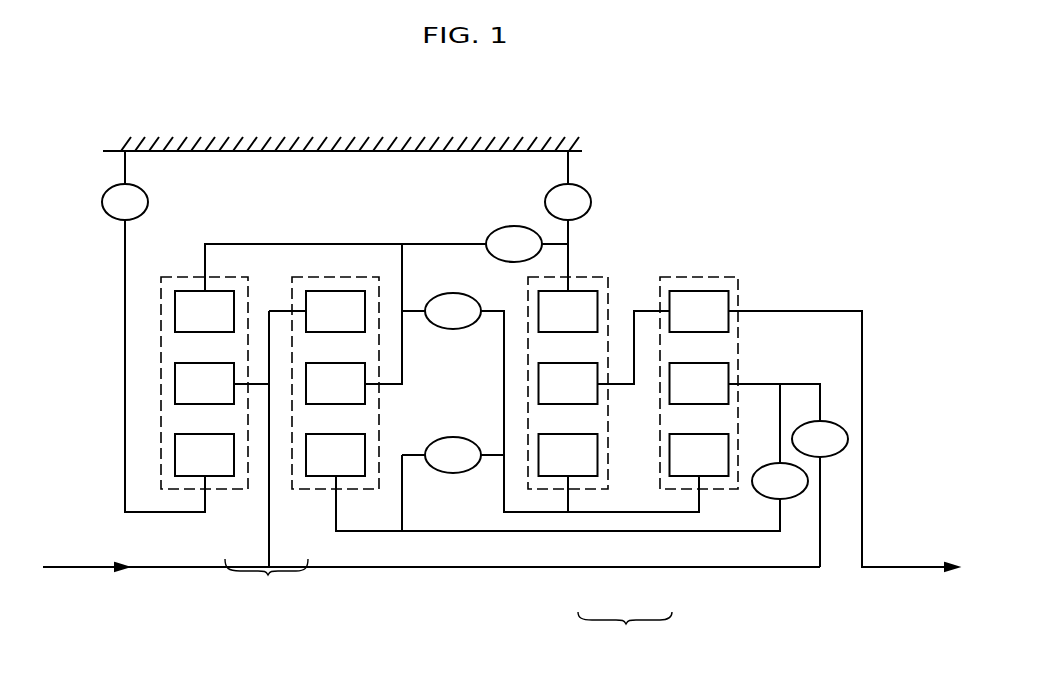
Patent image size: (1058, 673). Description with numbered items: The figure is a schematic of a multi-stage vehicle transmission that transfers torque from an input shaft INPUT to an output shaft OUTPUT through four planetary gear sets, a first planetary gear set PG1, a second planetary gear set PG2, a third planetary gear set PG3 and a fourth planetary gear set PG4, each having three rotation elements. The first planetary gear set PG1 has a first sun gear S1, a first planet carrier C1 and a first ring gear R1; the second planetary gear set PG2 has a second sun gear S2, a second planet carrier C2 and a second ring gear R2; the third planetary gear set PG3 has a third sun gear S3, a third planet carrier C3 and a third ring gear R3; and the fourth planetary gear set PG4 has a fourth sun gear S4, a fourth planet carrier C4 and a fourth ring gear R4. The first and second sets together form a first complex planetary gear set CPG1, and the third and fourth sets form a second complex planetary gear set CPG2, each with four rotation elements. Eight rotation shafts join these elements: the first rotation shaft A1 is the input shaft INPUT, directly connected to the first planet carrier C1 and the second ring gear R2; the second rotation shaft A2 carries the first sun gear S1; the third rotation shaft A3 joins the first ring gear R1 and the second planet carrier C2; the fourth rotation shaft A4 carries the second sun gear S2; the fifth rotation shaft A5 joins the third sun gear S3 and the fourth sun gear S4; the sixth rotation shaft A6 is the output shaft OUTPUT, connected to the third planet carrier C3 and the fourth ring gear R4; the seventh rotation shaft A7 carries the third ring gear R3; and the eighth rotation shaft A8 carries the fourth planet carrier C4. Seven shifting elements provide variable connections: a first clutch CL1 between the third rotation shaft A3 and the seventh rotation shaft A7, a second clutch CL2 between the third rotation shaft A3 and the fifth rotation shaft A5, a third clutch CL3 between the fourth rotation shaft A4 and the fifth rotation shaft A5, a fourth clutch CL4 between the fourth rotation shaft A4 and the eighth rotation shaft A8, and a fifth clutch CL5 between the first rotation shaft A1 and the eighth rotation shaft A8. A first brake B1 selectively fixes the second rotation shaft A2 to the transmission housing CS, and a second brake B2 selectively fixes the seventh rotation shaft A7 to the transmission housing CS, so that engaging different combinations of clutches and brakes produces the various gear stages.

The transmission housing CS is at (244, 149).
The first brake B1 is at (125, 185).
The second brake B2 is at (568, 185).
The first rotation shaft A1 is at (351, 568).
The second rotation shaft A2 is at (123, 337).
The third rotation shaft A3 is at (333, 243).
The fourth rotation shaft A4 is at (460, 532).
The fifth rotation shaft A5 is at (532, 513).
The sixth rotation shaft A6 is at (818, 310).
The seventh rotation shaft A7 is at (569, 258).
The eighth rotation shaft A8 is at (800, 384).
The first clutch CL1 is at (514, 244).
The second clutch CL2 is at (453, 311).
The third clutch CL3 is at (453, 455).
The fourth clutch CL4 is at (780, 481).
The fifth clutch CL5 is at (820, 439).
The first planetary gear set PG1 is at (224, 490).
The second planetary gear set PG2 is at (317, 490).
The third planetary gear set PG3 is at (593, 490).
The fourth planetary gear set PG4 is at (690, 490).
The first complex planetary gear set CPG1 is at (268, 575).
The second complex planetary gear set CPG2 is at (625, 633).
The first ring gear R1 is at (204, 311).
The second ring gear R2 is at (335, 311).
The third ring gear R3 is at (568, 311).
The fourth ring gear R4 is at (699, 311).
The first planet carrier C1 is at (204, 383).
The second planet carrier C2 is at (335, 383).
The third planet carrier C3 is at (568, 383).
The fourth planet carrier C4 is at (699, 383).
The first sun gear S1 is at (204, 455).
The second sun gear S2 is at (335, 455).
The third sun gear S3 is at (568, 455).
The fourth sun gear S4 is at (699, 455).
The input shaft INPUT is at (77, 549).
The output shaft OUTPUT is at (917, 549).